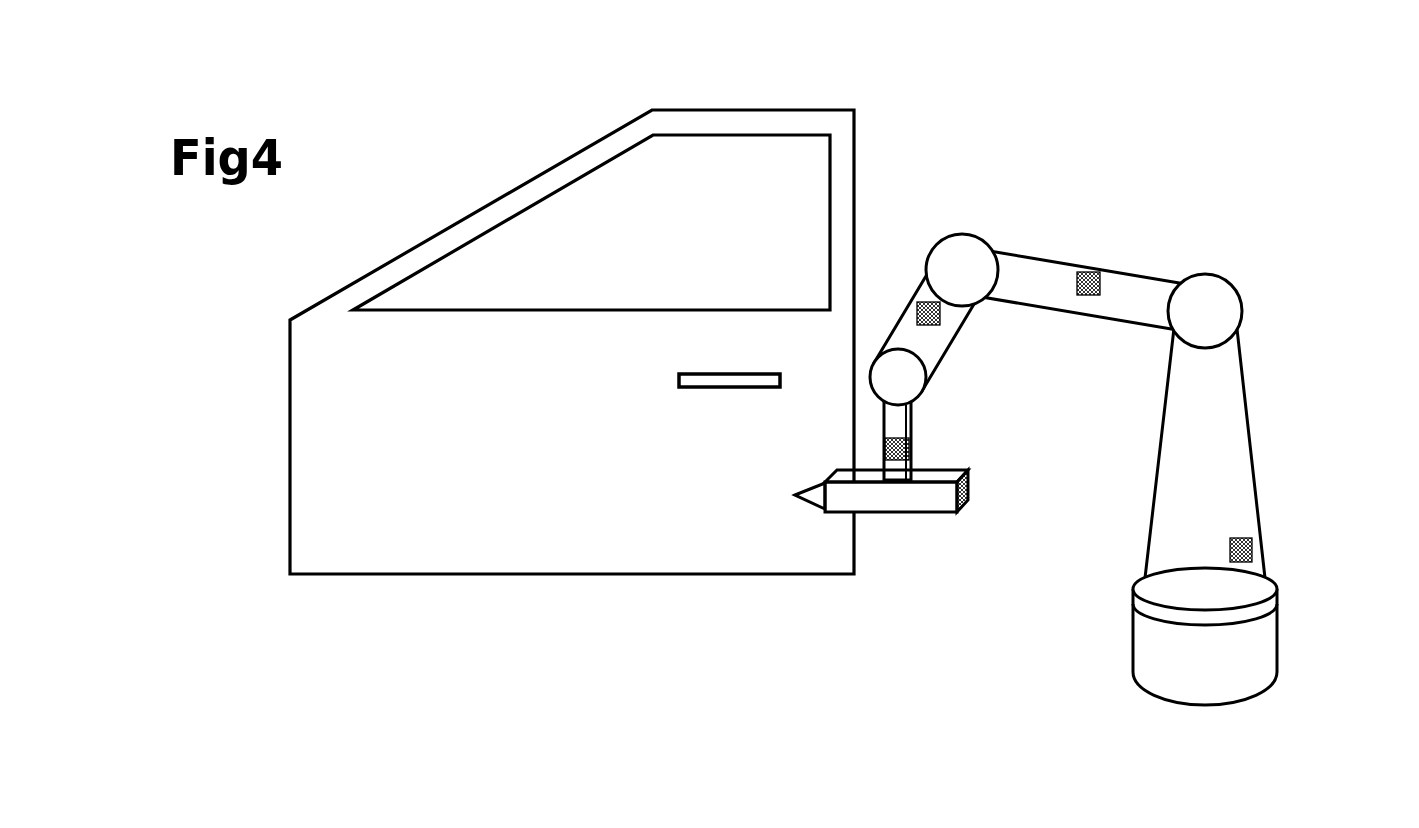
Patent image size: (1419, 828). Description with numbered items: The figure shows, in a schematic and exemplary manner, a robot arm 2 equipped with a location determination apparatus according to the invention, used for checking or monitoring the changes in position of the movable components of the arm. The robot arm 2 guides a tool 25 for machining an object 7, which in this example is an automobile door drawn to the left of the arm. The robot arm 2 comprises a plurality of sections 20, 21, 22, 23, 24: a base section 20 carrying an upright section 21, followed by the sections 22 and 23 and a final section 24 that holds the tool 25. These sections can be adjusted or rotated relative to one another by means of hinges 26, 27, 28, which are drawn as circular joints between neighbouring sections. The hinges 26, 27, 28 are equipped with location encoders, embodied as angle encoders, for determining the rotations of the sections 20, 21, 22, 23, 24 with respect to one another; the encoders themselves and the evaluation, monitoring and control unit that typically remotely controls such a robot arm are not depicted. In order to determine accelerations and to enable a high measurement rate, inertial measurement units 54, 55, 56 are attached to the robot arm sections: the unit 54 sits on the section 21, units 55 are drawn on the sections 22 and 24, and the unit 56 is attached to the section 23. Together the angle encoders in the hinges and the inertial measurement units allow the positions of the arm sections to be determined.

The robot arm 2 is at (1075, 397).
The object 7 is at (572, 380).
The section 20 is at (1215, 663).
The section 21 is at (1260, 444).
The section 22 is at (1124, 278).
The section 23 is at (967, 323).
The section 24 is at (890, 420).
The tool 25 is at (904, 528).
The hinge 26 is at (1258, 317).
The hinge 27 is at (1014, 244).
The hinge 28 is at (986, 393).
The inertial measurement unit 54 is at (1255, 548).
The inertial measurement unit 55 is at (1105, 270).
The inertial measurement unit 56 is at (928, 301).